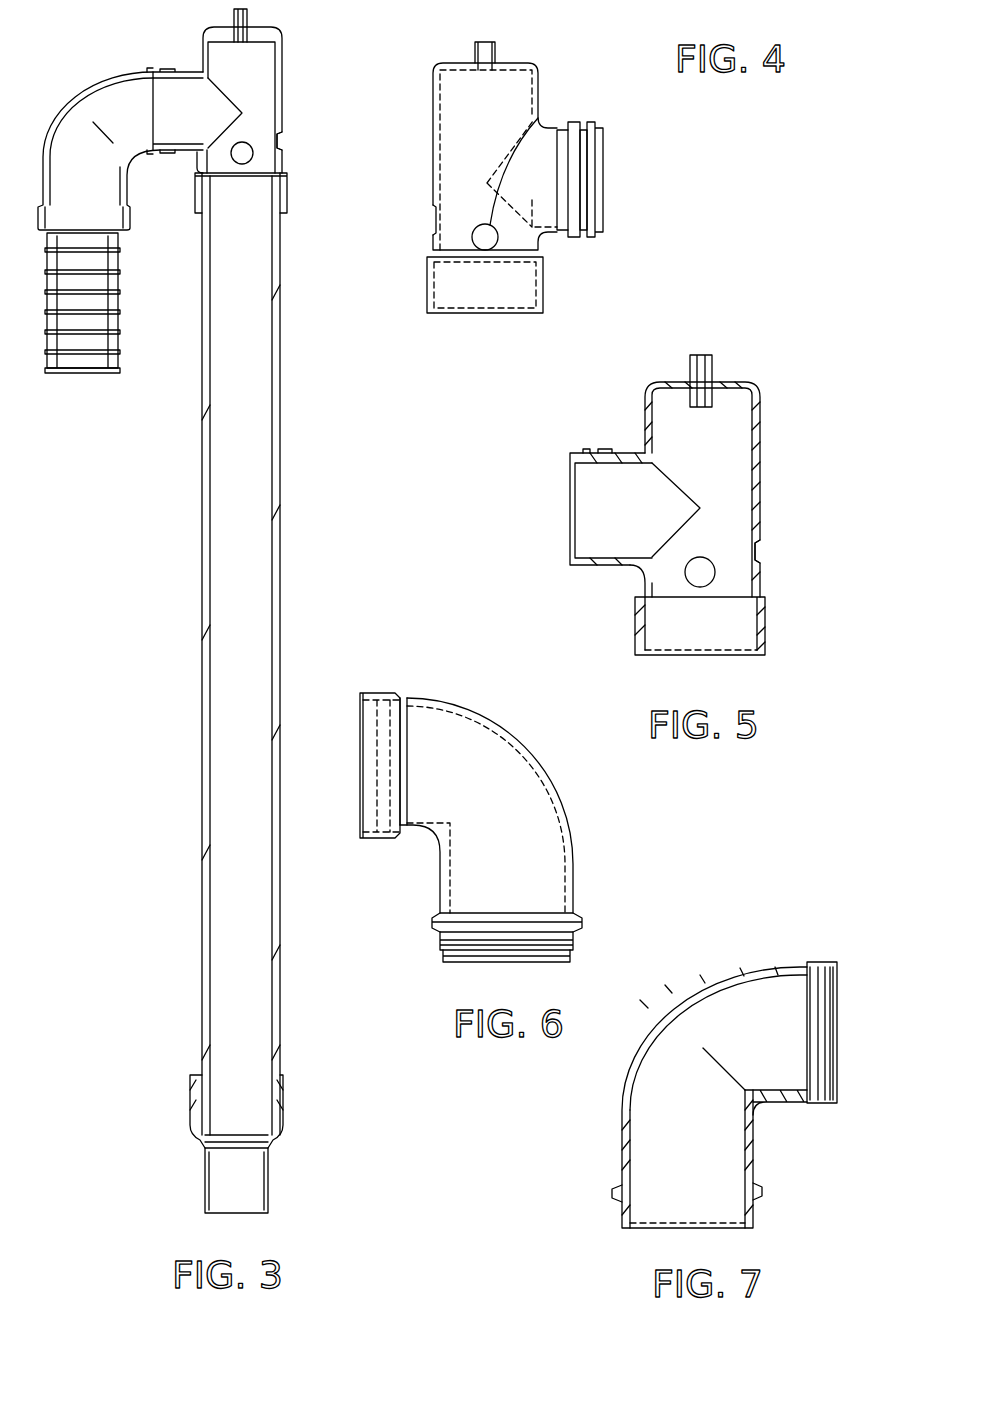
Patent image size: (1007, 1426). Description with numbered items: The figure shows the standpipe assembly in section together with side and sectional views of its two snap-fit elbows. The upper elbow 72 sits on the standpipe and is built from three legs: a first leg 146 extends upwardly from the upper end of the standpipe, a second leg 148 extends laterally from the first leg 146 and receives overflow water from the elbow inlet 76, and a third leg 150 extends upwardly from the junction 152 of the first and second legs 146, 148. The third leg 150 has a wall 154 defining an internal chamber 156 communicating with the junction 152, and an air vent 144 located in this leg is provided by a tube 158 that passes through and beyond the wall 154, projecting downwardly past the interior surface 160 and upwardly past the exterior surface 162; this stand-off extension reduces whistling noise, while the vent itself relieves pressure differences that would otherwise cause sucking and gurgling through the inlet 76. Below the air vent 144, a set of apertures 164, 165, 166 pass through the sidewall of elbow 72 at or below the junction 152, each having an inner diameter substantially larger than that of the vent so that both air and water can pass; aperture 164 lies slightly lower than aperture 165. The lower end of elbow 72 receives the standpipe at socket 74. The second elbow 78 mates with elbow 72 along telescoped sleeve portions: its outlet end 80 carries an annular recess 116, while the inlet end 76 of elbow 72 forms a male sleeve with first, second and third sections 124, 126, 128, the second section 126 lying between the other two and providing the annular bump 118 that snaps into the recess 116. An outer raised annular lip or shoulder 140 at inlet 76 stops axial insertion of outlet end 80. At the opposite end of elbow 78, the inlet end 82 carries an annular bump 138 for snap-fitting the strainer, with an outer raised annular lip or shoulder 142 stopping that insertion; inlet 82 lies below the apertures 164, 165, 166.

In FIG. 4, the elbow 72 is at (433, 130).
In FIG. 5, the elbow 72 is at (762, 440).
In FIG. 4, the lower socket 74 is at (440, 313).
In FIG. 5, the lower socket 74 is at (752, 656).
In FIG. 3, the inlet end 76 is at (82, 303).
In FIG. 4, the inlet end 76 is at (604, 218).
In FIG. 5, the inlet end 76 is at (570, 548).
In FIG. 6, the elbow 78 is at (530, 745).
In FIG. 7, the elbow 78 is at (665, 1012).
In FIG. 6, the outlet end 80 is at (360, 820).
In FIG. 7, the outlet end 80 is at (840, 1092).
In FIG. 6, the inlet end 82 is at (450, 962).
In FIG. 7, the inlet end 82 is at (635, 1228).
In FIG. 6, the annular recess 116 is at (368, 718).
In FIG. 7, the annular recess 116 is at (807, 965).
In FIG. 4, the annular bump 118 is at (592, 122).
In FIG. 5, the annular bump 118 is at (588, 452).
In FIG. 4, the first section 124 is at (598, 237).
In FIG. 4, the second section 126 is at (591, 237).
In FIG. 4, the third section 128 is at (584, 237).
In FIG. 6, the annular bump 138 is at (573, 945).
In FIG. 7, the annular bump 138 is at (757, 1210).
In FIG. 4, the annular lip or shoulder 140 is at (576, 122).
In FIG. 5, the annular lip or shoulder 140 is at (604, 452).
In FIG. 6, the annular lip or shoulder 142 is at (583, 923).
In FIG. 7, the annular lip or shoulder 142 is at (762, 1192).
In FIG. 3, the air vent 144 is at (250, 14).
In FIG. 4, the air vent 144 is at (497, 52).
In FIG. 5, the air vent 144 is at (704, 372).
In FIG. 4, the first leg 146 is at (433, 245).
In FIG. 4, the second leg 148 is at (605, 155).
In FIG. 4, the third leg 150 is at (433, 92).
In FIG. 4, the junction 152 is at (455, 178).
In FIG. 5, the junction 152 is at (752, 500).
In FIG. 5, the wall 154 is at (681, 380).
In FIG. 5, the internal chamber 156 is at (680, 457).
In FIG. 5, the tube 158 is at (708, 370).
In FIG. 5, the interior surface 160 is at (754, 393).
In FIG. 5, the exterior surface 162 is at (730, 385).
In FIG. 4, the aperture 164 is at (485, 241).
In FIG. 3, the aperture 165 is at (283, 141).
In FIG. 4, the aperture 165 is at (436, 222).
In FIG. 5, the aperture 165 is at (762, 552).
In FIG. 3, the aperture 166 is at (245, 162).
In FIG. 5, the aperture 166 is at (716, 571).